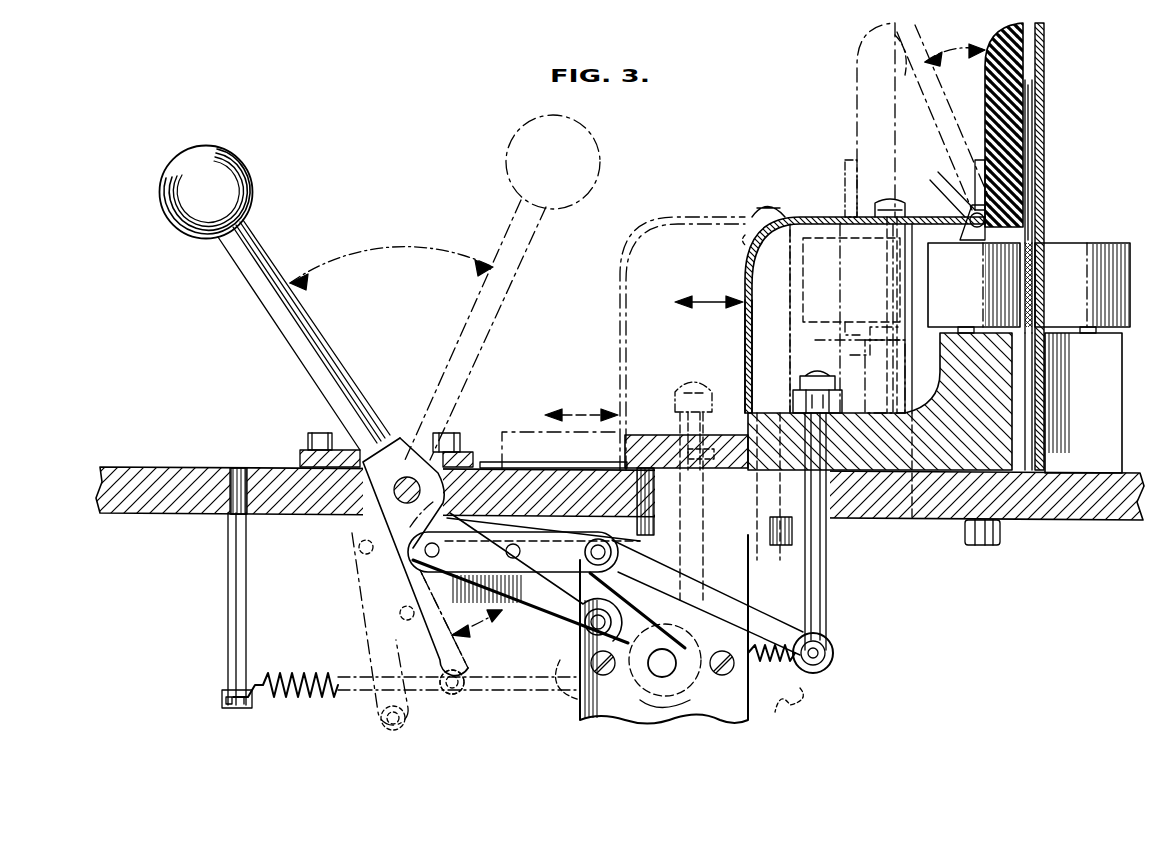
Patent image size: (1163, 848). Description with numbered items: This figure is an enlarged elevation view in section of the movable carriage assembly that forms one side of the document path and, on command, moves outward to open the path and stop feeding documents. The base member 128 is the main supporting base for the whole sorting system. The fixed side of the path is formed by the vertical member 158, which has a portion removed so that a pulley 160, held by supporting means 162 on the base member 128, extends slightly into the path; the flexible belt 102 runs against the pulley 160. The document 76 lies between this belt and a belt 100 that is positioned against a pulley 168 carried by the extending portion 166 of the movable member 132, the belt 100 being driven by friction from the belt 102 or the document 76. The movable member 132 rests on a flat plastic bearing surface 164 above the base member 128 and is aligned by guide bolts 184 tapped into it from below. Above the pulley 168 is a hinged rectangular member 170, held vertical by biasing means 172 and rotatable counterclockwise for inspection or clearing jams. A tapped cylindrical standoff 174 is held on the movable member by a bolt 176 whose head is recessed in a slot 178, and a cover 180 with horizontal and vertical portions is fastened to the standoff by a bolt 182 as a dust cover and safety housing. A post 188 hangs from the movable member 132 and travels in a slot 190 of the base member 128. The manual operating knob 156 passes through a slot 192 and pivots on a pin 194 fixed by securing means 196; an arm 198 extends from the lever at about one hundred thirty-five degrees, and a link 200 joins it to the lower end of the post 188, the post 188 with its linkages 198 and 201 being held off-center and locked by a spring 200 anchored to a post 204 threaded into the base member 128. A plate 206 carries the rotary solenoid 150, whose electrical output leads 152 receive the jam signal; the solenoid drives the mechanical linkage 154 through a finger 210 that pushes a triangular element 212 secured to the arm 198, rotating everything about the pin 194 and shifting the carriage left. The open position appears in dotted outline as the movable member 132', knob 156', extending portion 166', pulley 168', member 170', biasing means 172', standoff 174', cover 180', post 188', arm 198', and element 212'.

The document 76 is at (1034, 116).
The belt 100 is at (1024, 278).
The flexible belt 102 is at (1036, 268).
The base member 128 is at (185, 468).
The movable member 132 is at (691, 367).
The movable member (open position) 132' is at (561, 426).
The rotary solenoid 150 is at (580, 690).
The electrical output leads 152 is at (790, 700).
The mechanical linkage 154 is at (566, 680).
The manual operating knob 156 is at (275, 298).
The manual operating knob (open position) 156' is at (502, 287).
The vertical member 158 is at (1045, 62).
The pulley 160 is at (1095, 238).
The supporting means 162 is at (1110, 420).
The bearing surface 164 is at (585, 463).
The extending portion 166 is at (917, 401).
The extending portion (open position) 166' is at (827, 342).
The pulley 168 is at (974, 288).
The pulley (open position) 168' is at (783, 321).
The hinged rectangular member 170 is at (985, 125).
The hinged rectangular member (rotated position) 170' is at (855, 120).
The biasing means 172 is at (943, 132).
The biasing means (alternate position) 172' is at (827, 175).
The tapped cylindrical standoff 174 is at (851, 280).
The tapped cylindrical standoff (open position) 174' is at (715, 240).
The bolt 176 is at (862, 395).
The slot 178 is at (912, 520).
The cover 180 is at (865, 293).
The cover (open position) 180' is at (682, 322).
The bolt 182 is at (893, 212).
The guide bolts 184 is at (773, 540).
The post 188 is at (831, 510).
The post (open position) 188' is at (695, 400).
The slot 190 is at (658, 512).
The slot 192 is at (365, 516).
The pin 194 is at (405, 478).
The securing means 196 is at (306, 452).
The arm 198 is at (524, 575).
The arm (open position) 198' is at (363, 631).
The link / spring 200 is at (790, 612).
The connecting linkage 201 is at (300, 695).
The post 204 is at (228, 567).
The plate 206 is at (722, 705).
The finger 210 is at (656, 678).
The triangular element 212 is at (549, 582).
The triangular element (open position) 212' is at (390, 632).